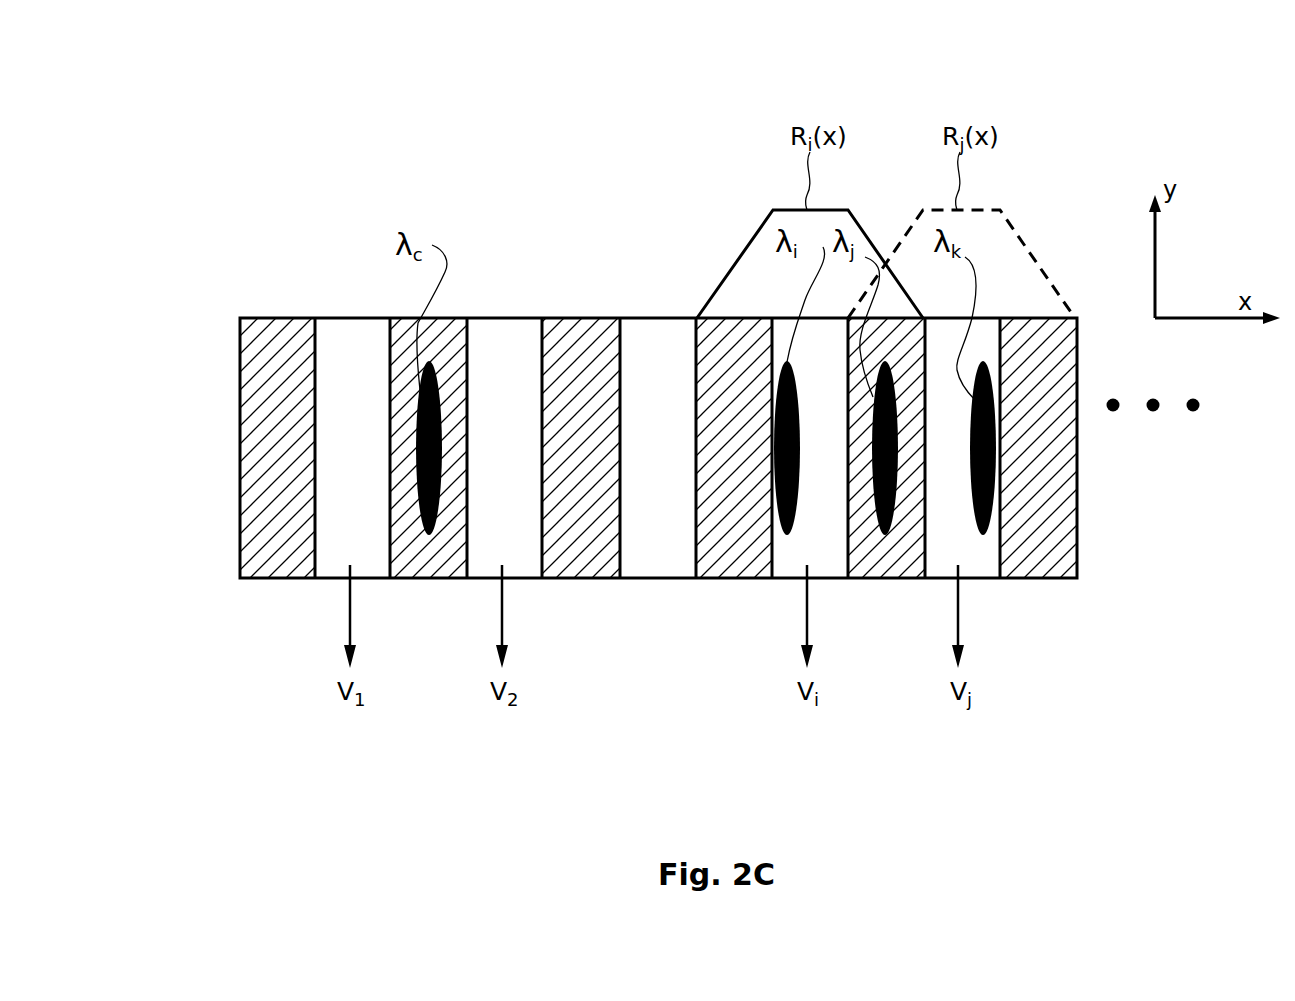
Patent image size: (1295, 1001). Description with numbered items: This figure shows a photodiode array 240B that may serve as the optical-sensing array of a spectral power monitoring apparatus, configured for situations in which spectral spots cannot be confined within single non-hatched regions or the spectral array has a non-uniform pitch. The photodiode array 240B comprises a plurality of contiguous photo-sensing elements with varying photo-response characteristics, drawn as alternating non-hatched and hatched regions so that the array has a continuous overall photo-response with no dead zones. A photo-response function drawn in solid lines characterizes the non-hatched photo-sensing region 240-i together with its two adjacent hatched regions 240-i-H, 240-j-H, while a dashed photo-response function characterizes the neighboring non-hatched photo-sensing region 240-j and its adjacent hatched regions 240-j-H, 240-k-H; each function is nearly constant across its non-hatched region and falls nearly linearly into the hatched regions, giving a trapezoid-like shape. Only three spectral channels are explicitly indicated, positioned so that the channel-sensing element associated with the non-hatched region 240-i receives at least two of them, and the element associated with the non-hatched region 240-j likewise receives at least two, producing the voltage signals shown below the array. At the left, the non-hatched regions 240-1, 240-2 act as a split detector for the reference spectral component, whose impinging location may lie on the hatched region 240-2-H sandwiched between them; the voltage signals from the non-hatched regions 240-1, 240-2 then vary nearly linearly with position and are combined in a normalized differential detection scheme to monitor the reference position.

The photodiode array 240B is at (223, 140).
The non-hatched region 240-1 is at (345, 332).
The non-hatched region 240-2 is at (513, 330).
The hatched region 240-2-H is at (410, 577).
The hatched region 240-i-H is at (733, 565).
The non-hatched photo-sensing region 240-i is at (785, 565).
The hatched region 240-j-H is at (898, 565).
The non-hatched photo-sensing region 240-j is at (975, 565).
The hatched region 240-k-H is at (1053, 565).